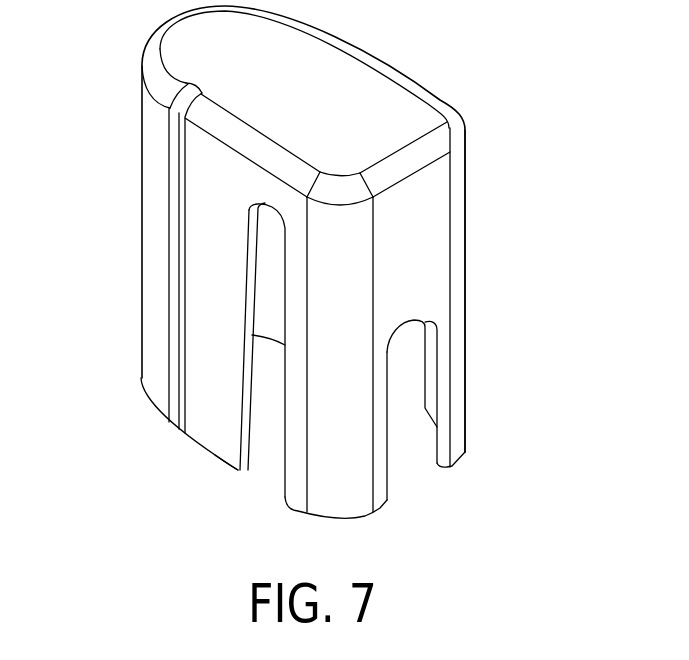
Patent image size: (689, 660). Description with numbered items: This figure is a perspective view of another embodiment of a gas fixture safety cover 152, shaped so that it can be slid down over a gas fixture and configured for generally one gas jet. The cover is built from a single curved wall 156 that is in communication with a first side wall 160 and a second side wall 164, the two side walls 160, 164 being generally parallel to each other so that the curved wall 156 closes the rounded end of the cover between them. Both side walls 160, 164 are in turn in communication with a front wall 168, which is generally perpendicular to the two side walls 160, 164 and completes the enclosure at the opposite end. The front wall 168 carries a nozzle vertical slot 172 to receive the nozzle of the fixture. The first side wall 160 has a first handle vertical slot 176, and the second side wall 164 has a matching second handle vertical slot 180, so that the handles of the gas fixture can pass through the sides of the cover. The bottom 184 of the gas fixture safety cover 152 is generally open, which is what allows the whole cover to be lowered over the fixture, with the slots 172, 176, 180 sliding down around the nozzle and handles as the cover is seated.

The gas fixture safety cover 152 is at (543, 90).
The curved wall 156 is at (157, 172).
The first side wall 160 is at (202, 420).
The second side wall 164 is at (408, 83).
The front wall 168 is at (413, 245).
The nozzle vertical slot 172 is at (415, 453).
The first handle vertical slot 176 is at (273, 463).
The second handle vertical slot 180 is at (424, 350).
The bottom 184 is at (235, 468).